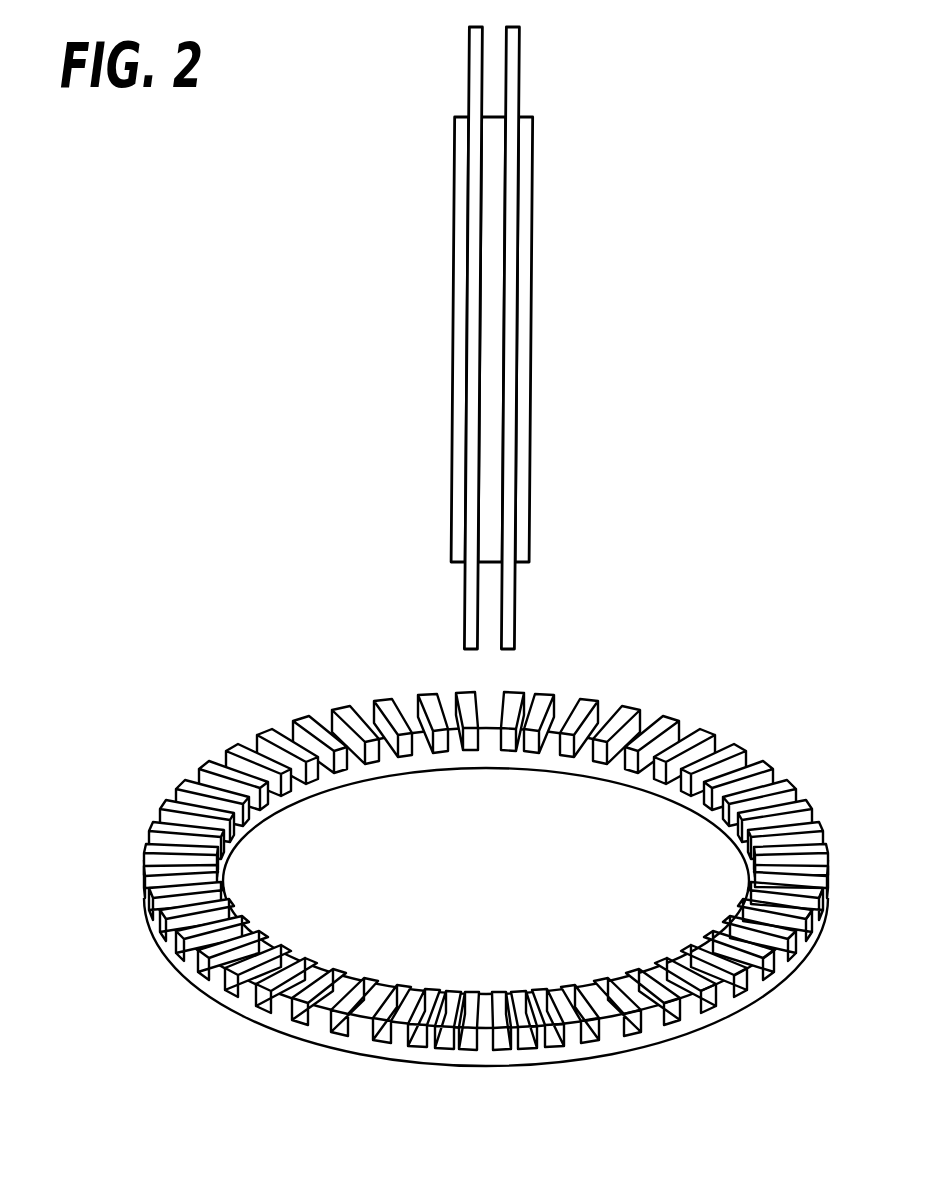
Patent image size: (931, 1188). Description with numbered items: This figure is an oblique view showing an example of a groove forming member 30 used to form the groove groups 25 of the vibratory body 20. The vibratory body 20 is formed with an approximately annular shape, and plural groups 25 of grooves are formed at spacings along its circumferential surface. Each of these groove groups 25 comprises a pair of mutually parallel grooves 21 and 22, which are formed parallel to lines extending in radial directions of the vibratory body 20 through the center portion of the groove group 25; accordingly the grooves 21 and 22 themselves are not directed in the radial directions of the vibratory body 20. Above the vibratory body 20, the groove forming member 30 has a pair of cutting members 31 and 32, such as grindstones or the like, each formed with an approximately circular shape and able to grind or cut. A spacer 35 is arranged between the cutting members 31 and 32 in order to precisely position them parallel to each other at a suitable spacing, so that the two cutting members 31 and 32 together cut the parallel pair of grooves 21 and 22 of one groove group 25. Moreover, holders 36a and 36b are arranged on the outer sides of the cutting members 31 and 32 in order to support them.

The vibratory body 20 is at (450, 879).
The groove 21 is at (468, 738).
The groove 22 is at (523, 760).
The groove group 25 is at (491, 799).
The groove forming member 30 is at (487, 349).
The cutting member 31 is at (465, 599).
The cutting member 32 is at (507, 625).
The spacer 35 is at (492, 201).
The holder 36a is at (452, 444).
The holder 36b is at (533, 462).